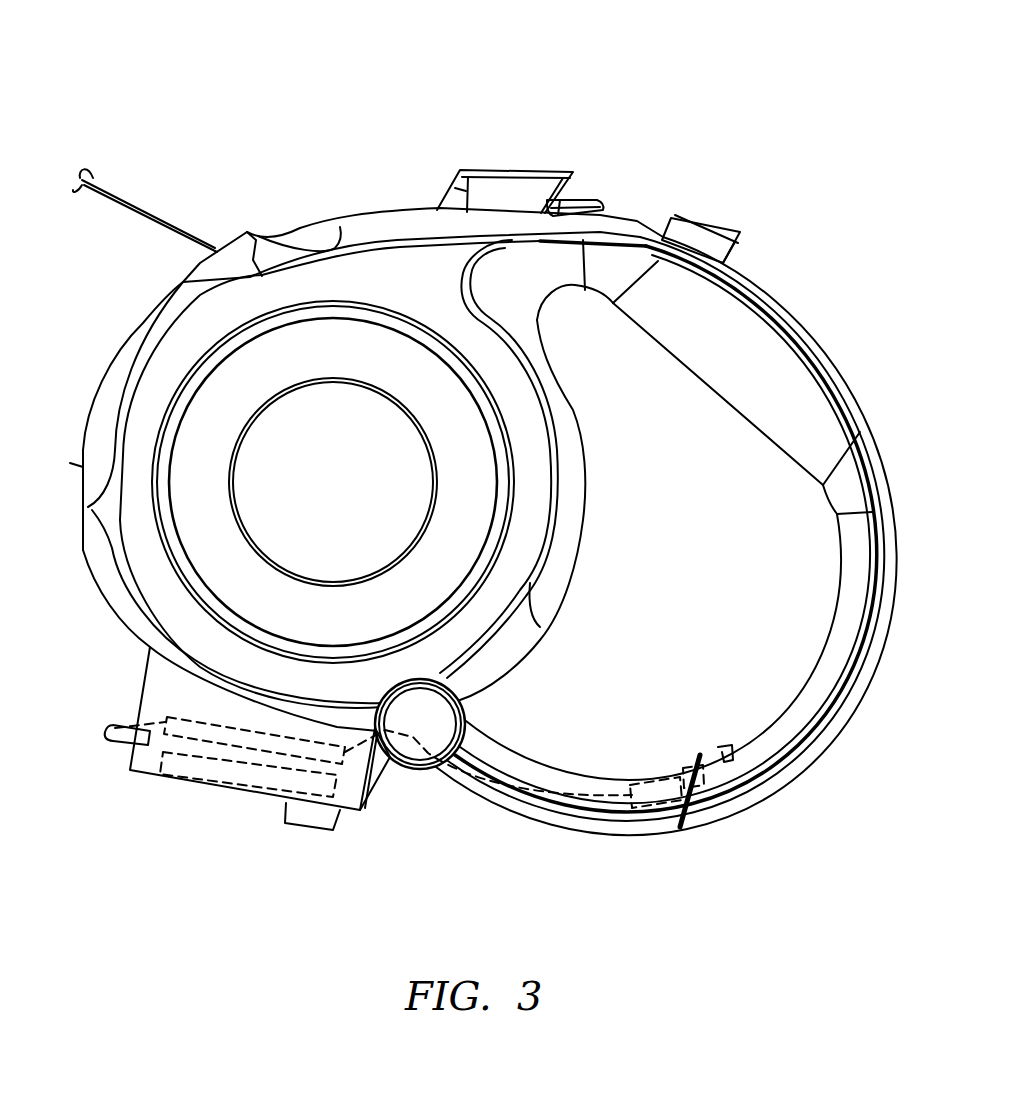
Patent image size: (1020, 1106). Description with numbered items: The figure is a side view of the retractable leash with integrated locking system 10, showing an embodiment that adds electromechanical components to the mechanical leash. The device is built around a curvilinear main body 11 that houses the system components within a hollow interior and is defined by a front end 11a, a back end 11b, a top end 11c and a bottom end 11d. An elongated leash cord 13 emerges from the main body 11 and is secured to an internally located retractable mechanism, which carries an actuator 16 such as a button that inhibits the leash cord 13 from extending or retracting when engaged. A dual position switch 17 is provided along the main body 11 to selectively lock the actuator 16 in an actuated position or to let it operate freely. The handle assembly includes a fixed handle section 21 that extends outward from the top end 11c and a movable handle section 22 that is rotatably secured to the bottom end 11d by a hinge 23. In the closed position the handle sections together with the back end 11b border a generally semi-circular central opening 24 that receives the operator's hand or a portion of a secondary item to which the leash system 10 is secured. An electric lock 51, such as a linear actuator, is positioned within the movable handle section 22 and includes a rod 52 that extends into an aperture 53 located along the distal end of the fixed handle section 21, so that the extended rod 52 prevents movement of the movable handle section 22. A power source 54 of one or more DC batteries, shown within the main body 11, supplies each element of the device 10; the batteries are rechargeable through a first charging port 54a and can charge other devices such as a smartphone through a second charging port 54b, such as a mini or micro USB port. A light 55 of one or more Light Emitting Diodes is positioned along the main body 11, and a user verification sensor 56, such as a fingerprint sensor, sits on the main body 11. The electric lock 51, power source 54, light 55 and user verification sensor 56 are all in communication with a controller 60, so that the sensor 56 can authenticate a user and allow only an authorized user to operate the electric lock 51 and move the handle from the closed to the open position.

The leash system 10 is at (219, 93).
The main body 11 is at (68, 400).
The front end 11a is at (70, 463).
The back end 11b is at (333, 482).
The top end 11c is at (317, 233).
The bottom end 11d is at (352, 498).
The leash cord 13 is at (142, 203).
The actuator 16 is at (467, 190).
The dual position switch 17 is at (573, 200).
The fixed handle section 21 is at (897, 550).
The movable handle section 22 is at (577, 835).
The hinge 23 is at (467, 727).
The central opening 24 is at (773, 620).
The electric lock 51 is at (653, 810).
The rod 52 is at (682, 773).
The aperture 53 is at (730, 787).
The power source 54 is at (267, 780).
The first charging port 54a is at (317, 817).
The second charging port 54b is at (377, 770).
The light 55 is at (113, 742).
The user verification sensor 56 is at (717, 224).
The controller 60 is at (237, 737).